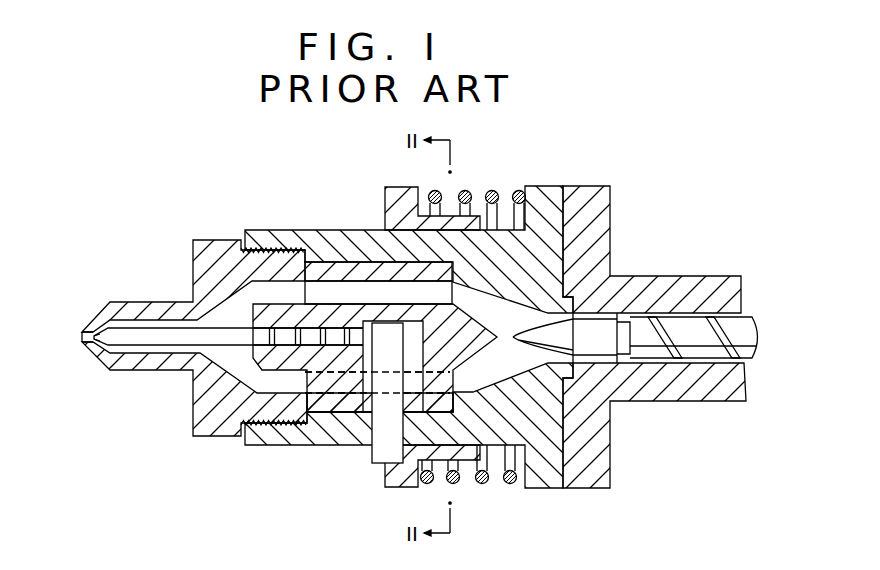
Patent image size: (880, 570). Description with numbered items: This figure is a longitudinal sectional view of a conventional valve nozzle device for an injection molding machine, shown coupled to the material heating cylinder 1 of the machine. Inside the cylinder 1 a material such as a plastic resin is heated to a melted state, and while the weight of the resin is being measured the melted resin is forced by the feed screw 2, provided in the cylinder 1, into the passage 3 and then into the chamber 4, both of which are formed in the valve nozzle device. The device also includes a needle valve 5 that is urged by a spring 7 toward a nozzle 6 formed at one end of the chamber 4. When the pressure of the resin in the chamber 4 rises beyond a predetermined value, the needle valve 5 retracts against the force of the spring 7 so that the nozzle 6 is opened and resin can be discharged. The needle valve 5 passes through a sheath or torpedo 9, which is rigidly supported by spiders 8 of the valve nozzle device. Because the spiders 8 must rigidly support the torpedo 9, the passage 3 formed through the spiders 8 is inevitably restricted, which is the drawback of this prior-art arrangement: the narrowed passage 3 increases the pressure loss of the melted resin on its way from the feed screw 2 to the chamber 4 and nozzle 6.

The material heating cylinder 1 is at (668, 395).
The feed screw 2 is at (687, 327).
The passage 3 is at (328, 292).
The chamber 4 is at (220, 318).
The needle valve 5 is at (140, 330).
The nozzle 6 is at (84, 336).
The spring 7 is at (487, 191).
The spiders 8 is at (367, 273).
The sheath or torpedo 9 is at (262, 360).